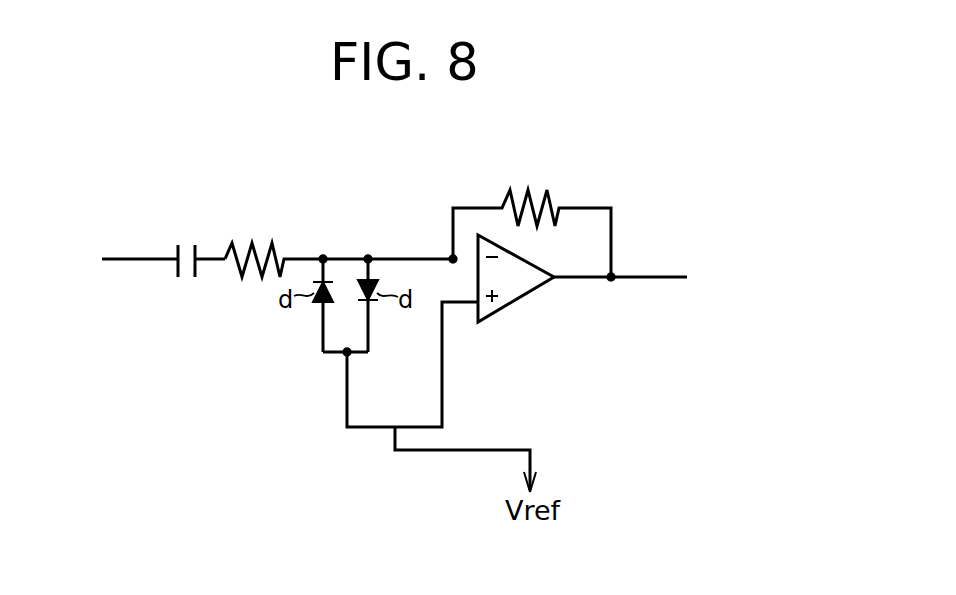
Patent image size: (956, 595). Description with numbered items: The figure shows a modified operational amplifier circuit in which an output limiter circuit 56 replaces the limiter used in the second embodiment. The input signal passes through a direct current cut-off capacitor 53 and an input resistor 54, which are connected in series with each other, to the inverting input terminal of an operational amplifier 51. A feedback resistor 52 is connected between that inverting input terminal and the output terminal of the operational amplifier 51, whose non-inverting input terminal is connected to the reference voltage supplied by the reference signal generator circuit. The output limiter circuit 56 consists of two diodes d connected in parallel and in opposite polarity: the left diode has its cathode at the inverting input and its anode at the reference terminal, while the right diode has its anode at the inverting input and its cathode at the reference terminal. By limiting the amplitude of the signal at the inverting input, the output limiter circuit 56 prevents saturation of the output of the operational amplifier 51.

The operational amplifier 51 is at (518, 298).
The feedback resistor 52 is at (546, 192).
The direct current cut-off capacitor 53 is at (186, 245).
The input resistor 54 is at (254, 243).
The output limiter circuit 56 is at (302, 382).